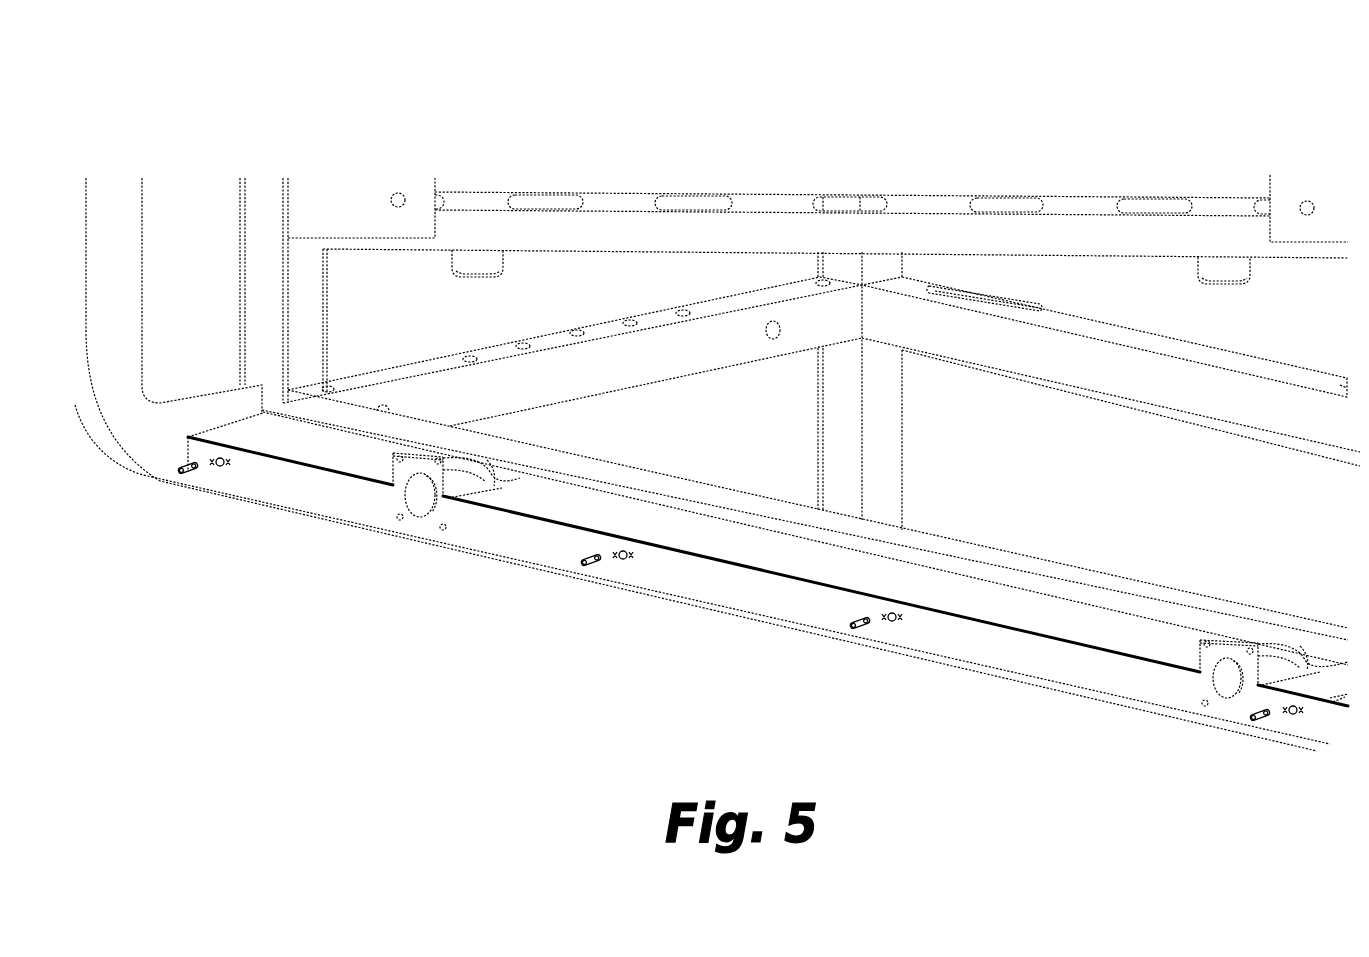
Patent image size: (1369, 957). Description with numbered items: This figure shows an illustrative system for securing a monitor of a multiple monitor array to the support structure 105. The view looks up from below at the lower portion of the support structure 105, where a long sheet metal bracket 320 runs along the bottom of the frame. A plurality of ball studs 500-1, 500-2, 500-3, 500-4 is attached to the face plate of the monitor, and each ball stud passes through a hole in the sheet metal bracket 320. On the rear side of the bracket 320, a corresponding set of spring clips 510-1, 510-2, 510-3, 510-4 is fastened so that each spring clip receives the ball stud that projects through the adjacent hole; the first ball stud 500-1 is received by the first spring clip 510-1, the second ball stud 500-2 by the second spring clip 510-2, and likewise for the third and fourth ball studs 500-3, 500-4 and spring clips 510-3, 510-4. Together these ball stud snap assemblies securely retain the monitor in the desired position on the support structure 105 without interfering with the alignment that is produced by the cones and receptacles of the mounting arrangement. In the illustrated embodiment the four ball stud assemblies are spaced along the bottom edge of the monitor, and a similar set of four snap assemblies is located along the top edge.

The support structure 105 is at (274, 147).
The sheet metal bracket 320 is at (248, 437).
The ball stud 500-1 is at (1262, 720).
The ball stud 500-2 is at (857, 627).
The ball stud 500-3 is at (590, 567).
The ball stud 500-4 is at (185, 478).
The spring clip 510-1 is at (1293, 717).
The spring clip 510-2 is at (892, 623).
The spring clip 510-3 is at (627, 562).
The spring clip 510-4 is at (223, 473).